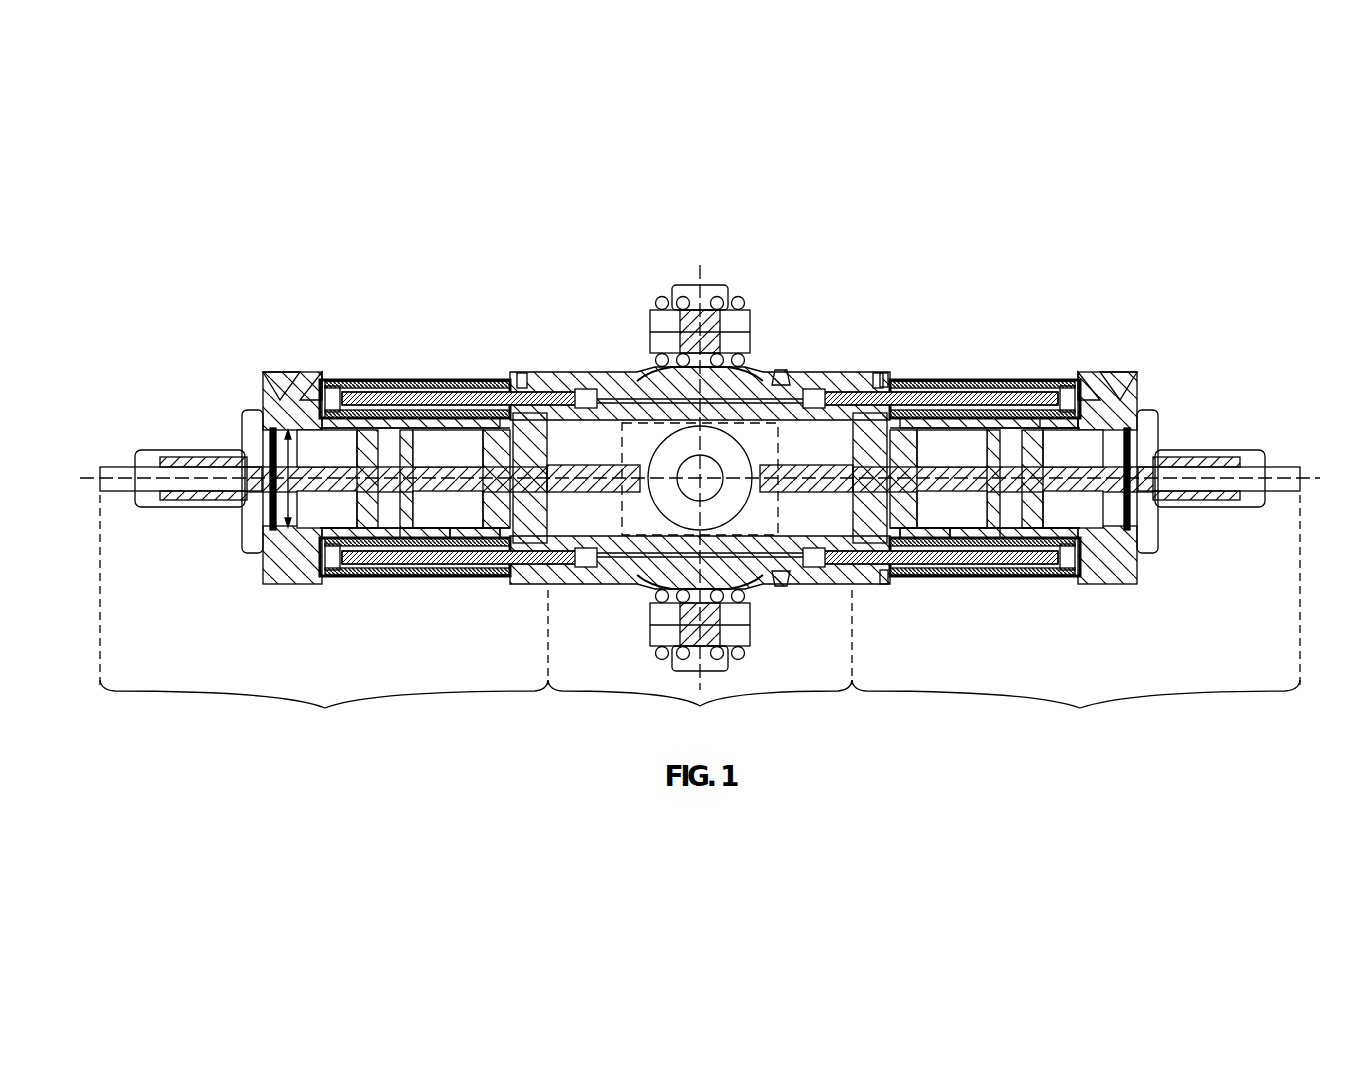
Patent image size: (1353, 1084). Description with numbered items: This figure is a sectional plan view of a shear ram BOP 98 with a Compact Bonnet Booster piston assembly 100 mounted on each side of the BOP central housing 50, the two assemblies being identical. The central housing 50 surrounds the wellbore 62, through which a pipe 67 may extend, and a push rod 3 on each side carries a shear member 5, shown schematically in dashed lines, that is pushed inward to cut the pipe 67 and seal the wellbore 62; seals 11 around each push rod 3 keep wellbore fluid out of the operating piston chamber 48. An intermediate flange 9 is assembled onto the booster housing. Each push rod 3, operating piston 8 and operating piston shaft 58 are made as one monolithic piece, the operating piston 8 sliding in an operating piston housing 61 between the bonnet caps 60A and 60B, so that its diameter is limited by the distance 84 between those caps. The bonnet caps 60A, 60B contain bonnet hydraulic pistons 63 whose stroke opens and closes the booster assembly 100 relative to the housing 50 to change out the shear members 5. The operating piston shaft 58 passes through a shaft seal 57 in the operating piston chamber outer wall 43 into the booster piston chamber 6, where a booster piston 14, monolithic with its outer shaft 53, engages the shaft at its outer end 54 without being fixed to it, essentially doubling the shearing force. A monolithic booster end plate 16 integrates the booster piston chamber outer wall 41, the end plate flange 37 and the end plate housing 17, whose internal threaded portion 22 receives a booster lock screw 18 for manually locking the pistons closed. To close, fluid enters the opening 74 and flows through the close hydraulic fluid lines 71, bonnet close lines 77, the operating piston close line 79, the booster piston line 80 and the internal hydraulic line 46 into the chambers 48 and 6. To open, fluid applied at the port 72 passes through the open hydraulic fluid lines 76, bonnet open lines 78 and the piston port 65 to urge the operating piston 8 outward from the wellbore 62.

The push rod 3 is at (596, 462).
The shear member 5 is at (660, 440).
The booster piston chamber 6 is at (338, 390).
The operating piston 8 is at (585, 392).
The intermediate flange 9 is at (522, 385).
The seals 11 is at (619, 443).
The booster piston 14 is at (432, 584).
The booster end plate 16 is at (172, 438).
The booster end plate housing 17 is at (182, 508).
The booster lock screw 18 is at (108, 491).
The internal threaded portion 22 is at (150, 501).
The booster end plate flange 37 is at (248, 411).
The booster piston chamber outer wall 41 is at (266, 458).
The operating piston chamber outer wall 43 is at (462, 584).
The internal hydraulic line 46 is at (280, 376).
The operating piston chamber 48 is at (492, 400).
The BOP central housing 50 is at (610, 405).
The outer shaft 53 is at (350, 584).
The operating piston shaft outer end 54 is at (354, 462).
The shaft seal 57 is at (417, 511).
The operating piston shaft 58 is at (395, 397).
The bonnet cap 60A is at (272, 584).
The bonnet cap 60B is at (300, 373).
The operating piston housing 61 is at (440, 395).
The wellbore 62 is at (720, 345).
The bonnet hydraulic pistons 63 is at (352, 395).
The piston port 65 is at (560, 570).
The pipe 67 is at (650, 378).
The close hydraulic fluid lines 71 is at (716, 297).
The port 72 is at (783, 589).
The opening 74 is at (781, 371).
The open hydraulic fluid lines 76 is at (650, 590).
The bonnet close hydraulic fluid lines 77 is at (905, 405).
The bonnet open hydraulic fluid lines 78 is at (935, 584).
The wellbore close operating piston hydraulic fluid line 79 is at (960, 400).
The booster piston hydraulic fluid line 80 is at (1150, 410).
The distance 84 is at (283, 526).
The BOP 98 is at (700, 707).
The Compact Bonnet Booster piston assembly 100 is at (700, 711).